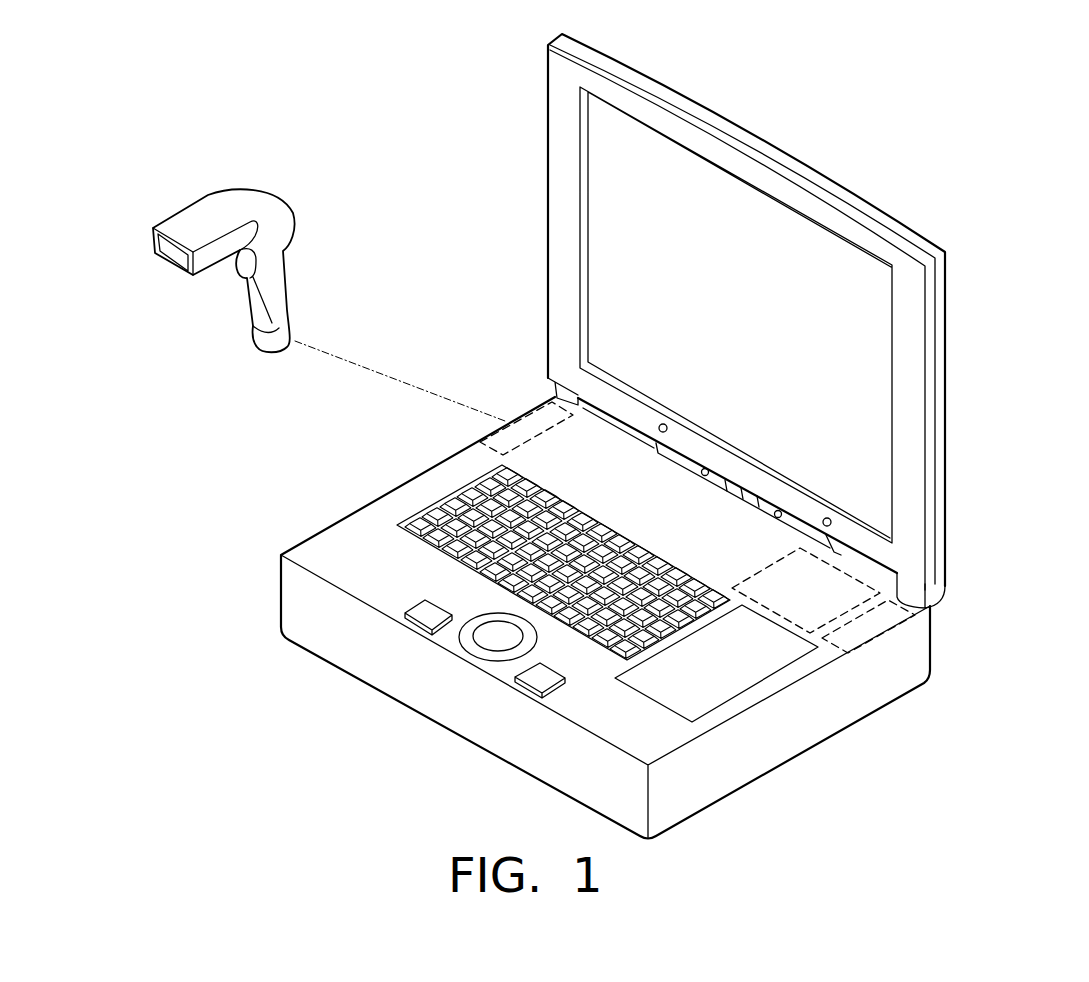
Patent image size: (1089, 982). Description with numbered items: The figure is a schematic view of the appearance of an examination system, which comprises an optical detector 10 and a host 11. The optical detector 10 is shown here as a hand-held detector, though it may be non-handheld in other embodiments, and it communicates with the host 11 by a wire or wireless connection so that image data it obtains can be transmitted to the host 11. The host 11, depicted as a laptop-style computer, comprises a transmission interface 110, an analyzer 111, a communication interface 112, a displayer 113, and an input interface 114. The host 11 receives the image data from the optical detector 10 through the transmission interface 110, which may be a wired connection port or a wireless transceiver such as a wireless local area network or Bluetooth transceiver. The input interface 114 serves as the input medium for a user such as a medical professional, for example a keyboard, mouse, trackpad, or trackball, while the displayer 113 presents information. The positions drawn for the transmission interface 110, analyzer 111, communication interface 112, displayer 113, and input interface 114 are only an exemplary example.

The optical detector 10 is at (226, 190).
The host 11 is at (663, 436).
The transmission interface 110 is at (530, 427).
The analyzer 111 is at (818, 610).
The communication interface 112 is at (873, 623).
The displayer 113 is at (817, 220).
The input interface 114 is at (470, 578).